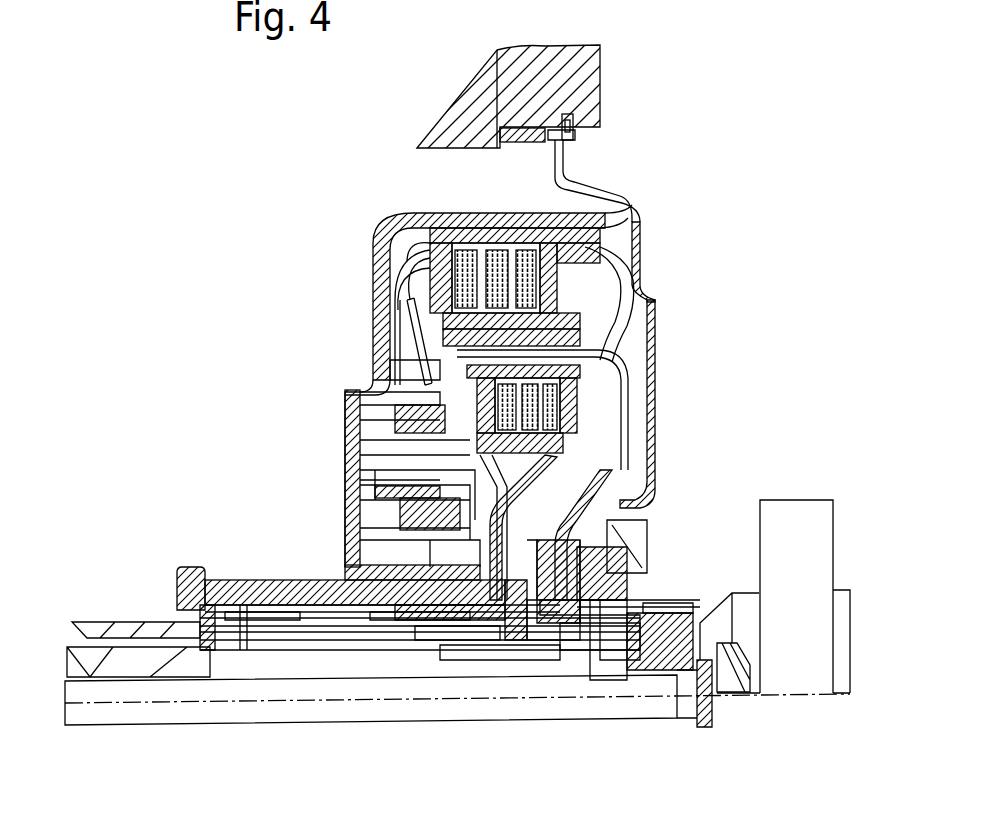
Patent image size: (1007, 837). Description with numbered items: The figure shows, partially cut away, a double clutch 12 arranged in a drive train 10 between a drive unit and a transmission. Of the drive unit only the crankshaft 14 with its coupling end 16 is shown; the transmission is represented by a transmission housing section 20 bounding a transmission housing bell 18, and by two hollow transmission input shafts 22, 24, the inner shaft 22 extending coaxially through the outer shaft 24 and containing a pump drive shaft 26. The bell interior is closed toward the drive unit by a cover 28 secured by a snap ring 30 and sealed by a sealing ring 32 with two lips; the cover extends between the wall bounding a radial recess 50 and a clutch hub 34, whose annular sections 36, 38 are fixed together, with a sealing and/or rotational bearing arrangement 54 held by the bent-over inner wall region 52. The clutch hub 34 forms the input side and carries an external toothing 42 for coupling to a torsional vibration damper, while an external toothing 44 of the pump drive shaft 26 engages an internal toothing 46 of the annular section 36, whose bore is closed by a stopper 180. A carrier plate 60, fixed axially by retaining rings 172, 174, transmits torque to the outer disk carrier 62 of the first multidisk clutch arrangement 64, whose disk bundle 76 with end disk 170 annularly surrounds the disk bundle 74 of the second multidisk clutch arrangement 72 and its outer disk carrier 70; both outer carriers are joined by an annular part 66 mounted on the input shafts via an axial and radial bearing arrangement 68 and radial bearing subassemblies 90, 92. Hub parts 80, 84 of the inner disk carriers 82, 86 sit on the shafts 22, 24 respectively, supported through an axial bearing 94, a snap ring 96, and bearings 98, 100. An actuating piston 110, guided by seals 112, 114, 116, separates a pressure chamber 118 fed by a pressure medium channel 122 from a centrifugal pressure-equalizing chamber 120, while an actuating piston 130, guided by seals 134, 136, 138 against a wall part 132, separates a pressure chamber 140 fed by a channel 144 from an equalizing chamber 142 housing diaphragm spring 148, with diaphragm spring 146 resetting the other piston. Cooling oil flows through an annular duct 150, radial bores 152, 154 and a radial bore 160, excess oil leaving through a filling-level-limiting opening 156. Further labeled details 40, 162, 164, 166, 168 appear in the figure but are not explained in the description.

The drive train 10 is at (286, 266).
The double clutch 12 is at (364, 343).
The output shaft 14 is at (842, 682).
The coupling end 16 is at (780, 514).
The transmission housing bell 18 is at (406, 203).
The transmission housing section 20 is at (582, 64).
The transmission input shaft 22 is at (110, 672).
The transmission input shaft 24 is at (293, 606).
The pump drive shaft 26 is at (123, 714).
The cover 28 is at (654, 291).
The snap ring 30 is at (576, 134).
The sealing ring 32 is at (548, 134).
The clutch hub 34 is at (633, 672).
The annular section 36 is at (653, 682).
The annular section 38 is at (623, 590).
The driving member 40 is at (655, 580).
The external toothing 42 is at (683, 598).
The external toothing 44 is at (667, 708).
The internal toothing 46 is at (682, 672).
The radial recess 50 is at (500, 128).
The radially inner wall region 52 is at (614, 482).
The sealing and/or rotational bearing arrangement 54 is at (640, 540).
The carrier plate 60 is at (638, 358).
The outer disk carrier 62 is at (412, 228).
The first multidisk clutch arrangement 64 is at (562, 294).
The annular part 66 is at (184, 580).
The axial and radial bearing arrangement 68 is at (207, 625).
The outer disk carrier 70 is at (392, 458).
The second multidisk clutch arrangement 72 is at (653, 378).
The disk bundle 74 is at (360, 383).
The disk bundle 76 is at (560, 279).
The hub part 80 is at (527, 642).
The inner disk carrier 82 is at (644, 328).
The hub part 84 is at (447, 642).
The inner disk carrier 86 is at (600, 446).
The radial bearing subassembly 90 is at (217, 618).
The radial bearing subassembly 92 is at (423, 648).
The axial bearing 94 is at (503, 652).
The snap ring 96 is at (612, 662).
The bearing 98 is at (540, 642).
The radial bearing 100 is at (553, 658).
The actuating piston 110 is at (367, 474).
The seal 112 is at (360, 486).
The seal 114 is at (338, 498).
The seal 116 is at (350, 650).
The pressure chamber 118 is at (352, 558).
The centrifugal pressure-equalizing chamber 120 is at (383, 640).
The pressure medium channel 122 is at (303, 612).
The actuating piston 130 is at (400, 422).
The wall part 132 is at (373, 441).
The seal 134 is at (342, 471).
The seal 136 is at (360, 410).
The seal 138 is at (378, 540).
The pressure chamber 140 is at (360, 528).
The centrifugal pressure-equalizing chamber 142 is at (392, 520).
The pressure medium channel 144 is at (247, 618).
The diaphragm spring 146 is at (415, 286).
The diaphragm spring 148 is at (467, 634).
The annular duct 150 is at (257, 612).
The radial bore 152 is at (417, 640).
The radial bore 154 is at (487, 644).
The filling-level-limiting opening 156 is at (578, 403).
The radial bore 160 is at (330, 667).
The lever 162 is at (417, 323).
The guide 164 is at (390, 326).
The spring 166 is at (430, 250).
The stop 168 is at (400, 360).
The end disk 170 is at (592, 256).
The retaining ring 172 is at (547, 213).
The retaining ring 174 is at (575, 216).
The stopper 180 is at (712, 718).